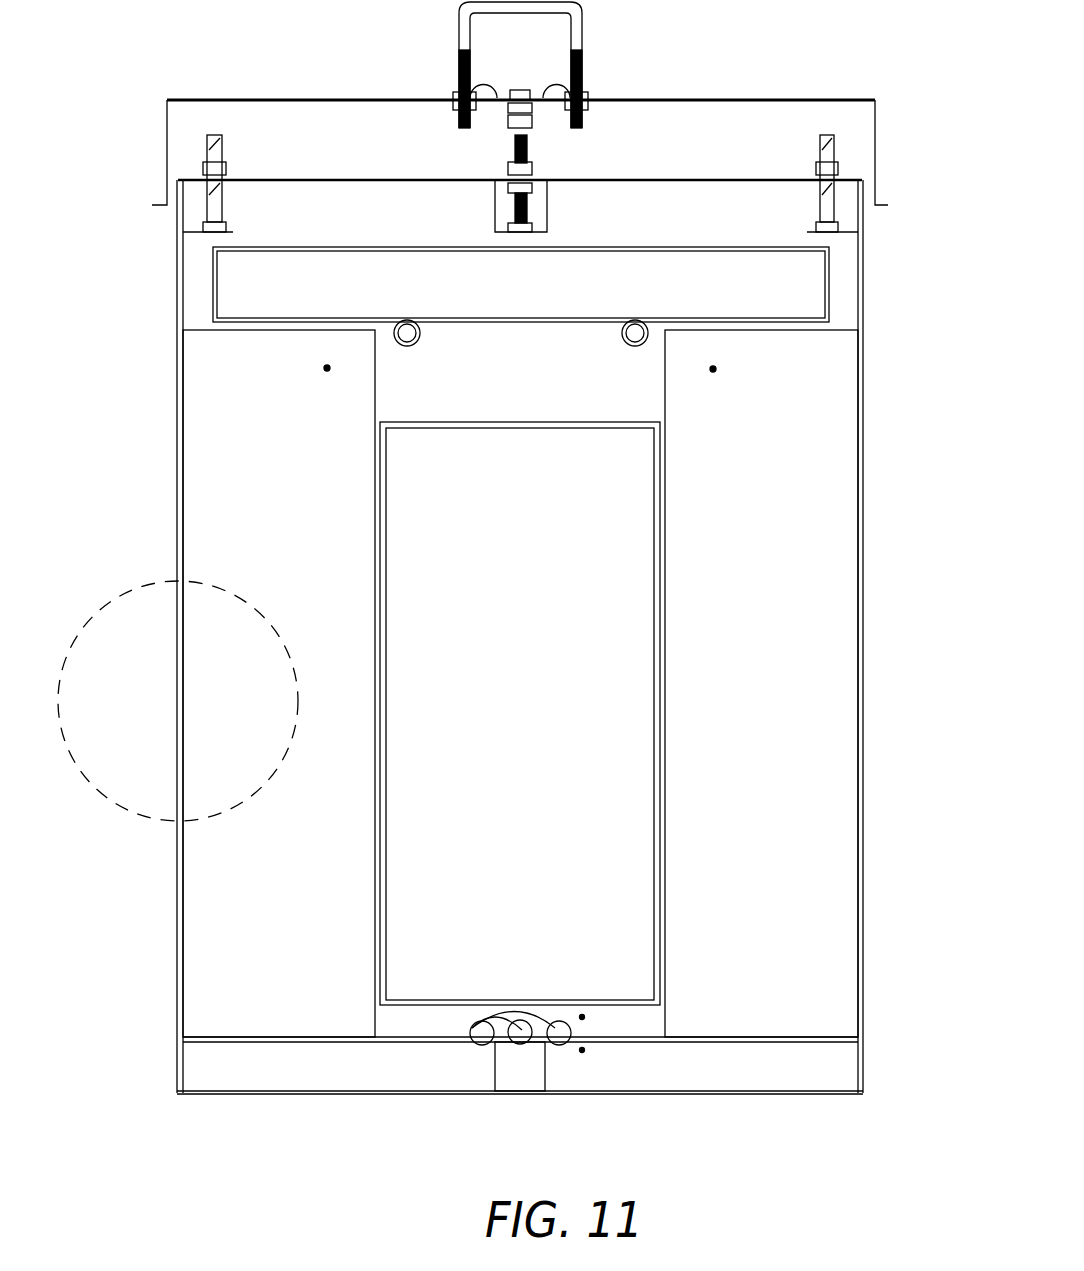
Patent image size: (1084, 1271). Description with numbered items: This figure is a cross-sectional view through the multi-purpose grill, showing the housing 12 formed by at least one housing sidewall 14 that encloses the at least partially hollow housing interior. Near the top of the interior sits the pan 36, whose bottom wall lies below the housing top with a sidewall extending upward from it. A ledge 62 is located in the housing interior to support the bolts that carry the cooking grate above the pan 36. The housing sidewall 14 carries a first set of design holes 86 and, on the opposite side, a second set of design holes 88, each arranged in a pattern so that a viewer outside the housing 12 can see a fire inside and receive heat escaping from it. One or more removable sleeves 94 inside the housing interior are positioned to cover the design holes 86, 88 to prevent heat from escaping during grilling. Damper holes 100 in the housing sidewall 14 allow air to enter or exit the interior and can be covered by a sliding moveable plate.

The housing 12 is at (117, 590).
The housing sidewall 14 is at (864, 778).
The pan 36 is at (830, 300).
The ledge 62 is at (847, 233).
The first set of design holes 86 is at (177, 720).
The second set of design holes 88 is at (864, 703).
The removable sleeve 94 is at (183, 645).
The damper holes 100 is at (472, 1028).